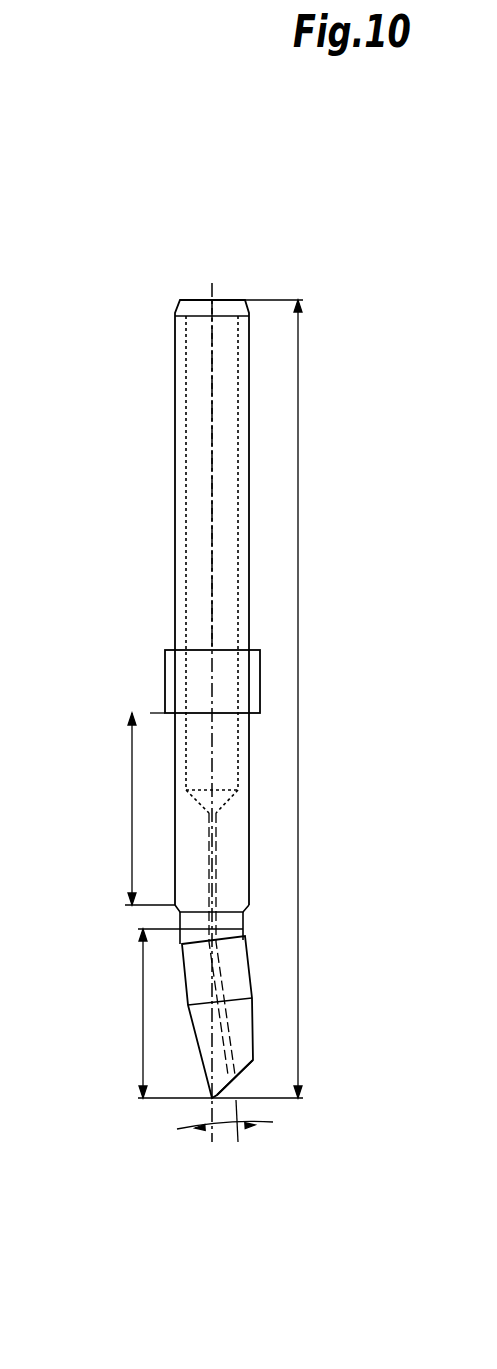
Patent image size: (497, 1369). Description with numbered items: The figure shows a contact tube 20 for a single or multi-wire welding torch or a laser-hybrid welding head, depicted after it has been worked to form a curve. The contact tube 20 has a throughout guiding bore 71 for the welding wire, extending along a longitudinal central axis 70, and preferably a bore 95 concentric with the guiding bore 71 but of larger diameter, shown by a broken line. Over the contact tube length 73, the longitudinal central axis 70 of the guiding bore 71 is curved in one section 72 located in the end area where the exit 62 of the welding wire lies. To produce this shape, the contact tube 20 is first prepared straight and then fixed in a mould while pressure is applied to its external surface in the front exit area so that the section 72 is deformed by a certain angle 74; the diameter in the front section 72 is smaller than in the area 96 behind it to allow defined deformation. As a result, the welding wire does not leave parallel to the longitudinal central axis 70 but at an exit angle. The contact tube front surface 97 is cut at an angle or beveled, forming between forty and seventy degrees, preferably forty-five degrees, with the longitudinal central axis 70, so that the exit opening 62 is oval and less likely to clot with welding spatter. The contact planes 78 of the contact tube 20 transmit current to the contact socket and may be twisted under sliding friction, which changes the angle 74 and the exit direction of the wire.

The contact tube 20 is at (207, 681).
The bore 95 is at (218, 457).
The contact planes 78 is at (175, 410).
The longitudinal central axis 70 is at (212, 525).
The contact tube length 73 is at (298, 463).
The area behind the front section 96 is at (132, 805).
The section 72 is at (143, 1013).
The guiding bore 71 is at (225, 1008).
The contact tube front surface 97 is at (245, 1072).
The exit 62 is at (243, 1095).
The angle 74 is at (227, 1130).